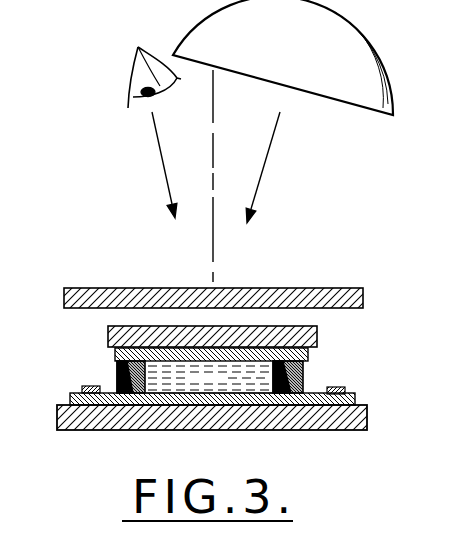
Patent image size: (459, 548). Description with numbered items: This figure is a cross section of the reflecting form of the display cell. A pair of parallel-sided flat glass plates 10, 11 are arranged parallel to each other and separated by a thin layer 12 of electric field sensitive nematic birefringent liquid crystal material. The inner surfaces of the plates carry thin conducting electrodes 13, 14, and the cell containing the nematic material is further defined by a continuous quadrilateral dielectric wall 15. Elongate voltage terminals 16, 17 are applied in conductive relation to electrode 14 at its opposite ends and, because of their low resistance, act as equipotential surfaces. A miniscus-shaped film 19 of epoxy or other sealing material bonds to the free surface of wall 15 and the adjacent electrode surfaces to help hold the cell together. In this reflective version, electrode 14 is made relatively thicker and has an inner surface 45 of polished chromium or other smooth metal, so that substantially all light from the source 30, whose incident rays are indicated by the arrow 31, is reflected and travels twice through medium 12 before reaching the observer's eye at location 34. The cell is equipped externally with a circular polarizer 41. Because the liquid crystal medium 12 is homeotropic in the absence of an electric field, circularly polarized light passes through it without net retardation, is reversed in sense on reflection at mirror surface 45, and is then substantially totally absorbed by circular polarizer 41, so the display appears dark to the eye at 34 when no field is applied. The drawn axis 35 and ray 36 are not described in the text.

The glass plate 10 is at (222, 326).
The glass plate 11 is at (367, 420).
The layer of nematic birefringent liquid crystal material 12 is at (209, 378).
The conducting electrode 13 is at (312, 356).
The conducting electrode 14 is at (355, 400).
The dielectric wall 15 is at (304, 375).
The voltage terminal 16 is at (345, 390).
The voltage terminal 17 is at (82, 388).
The miniscus-shaped film of sealing material 19 is at (117, 390).
The light source 30 is at (376, 52).
The arrow indicating incident light 31 is at (265, 178).
The observer's eye location 34 is at (133, 78).
The normal axis 35 is at (213, 123).
The viewing direction ray 36 is at (162, 168).
The circular polarizer 41 is at (327, 289).
The inner reflecting surface 45 is at (252, 389).